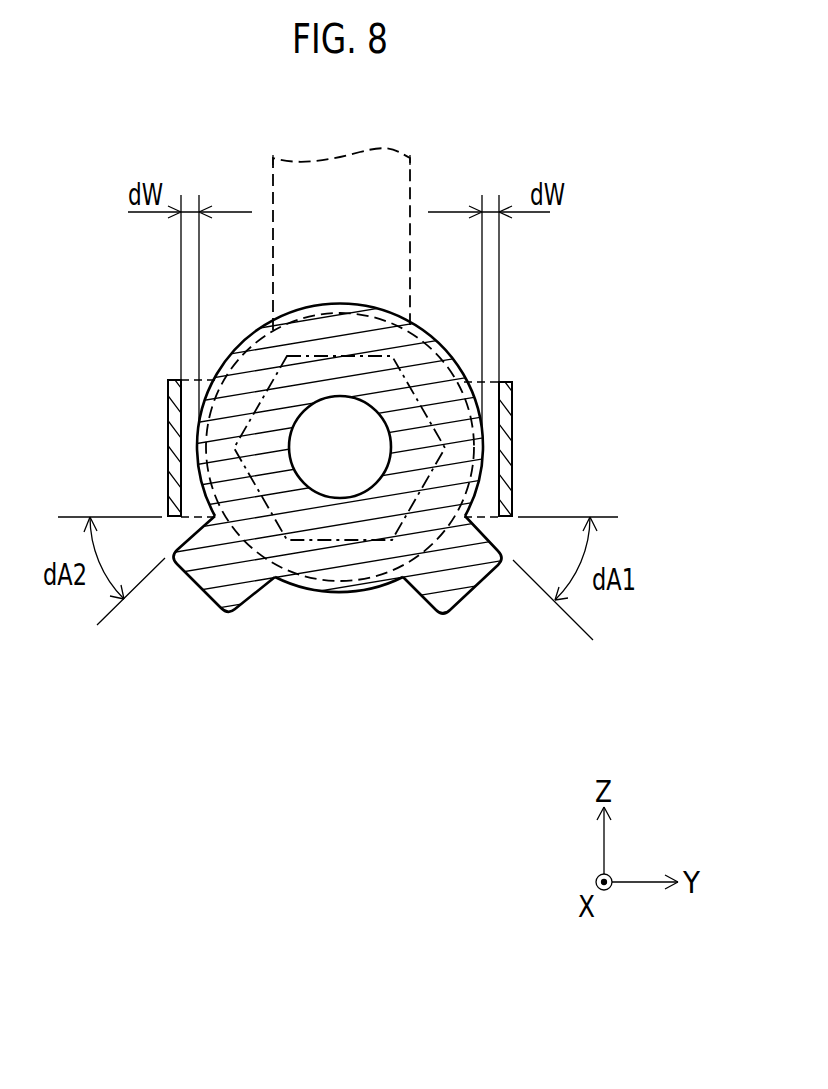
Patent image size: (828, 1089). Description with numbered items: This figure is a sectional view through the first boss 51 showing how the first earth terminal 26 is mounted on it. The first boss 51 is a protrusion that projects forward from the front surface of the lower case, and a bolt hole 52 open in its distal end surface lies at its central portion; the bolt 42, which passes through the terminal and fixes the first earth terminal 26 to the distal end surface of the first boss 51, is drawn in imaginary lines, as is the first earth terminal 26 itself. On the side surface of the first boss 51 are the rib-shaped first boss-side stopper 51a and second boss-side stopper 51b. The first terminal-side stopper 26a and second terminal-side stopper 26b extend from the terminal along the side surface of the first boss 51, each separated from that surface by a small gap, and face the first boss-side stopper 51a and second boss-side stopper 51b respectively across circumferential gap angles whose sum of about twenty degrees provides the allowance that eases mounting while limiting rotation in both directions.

The first earth terminal 26 is at (240, 345).
The first terminal-side stopper 26a is at (512, 425).
The second terminal-side stopper 26b is at (168, 400).
The bolt 42 is at (339, 543).
The first boss 51 is at (305, 590).
The first boss-side stopper 51a is at (468, 593).
The second boss-side stopper 51b is at (217, 600).
The bolt hole 52 is at (390, 460).